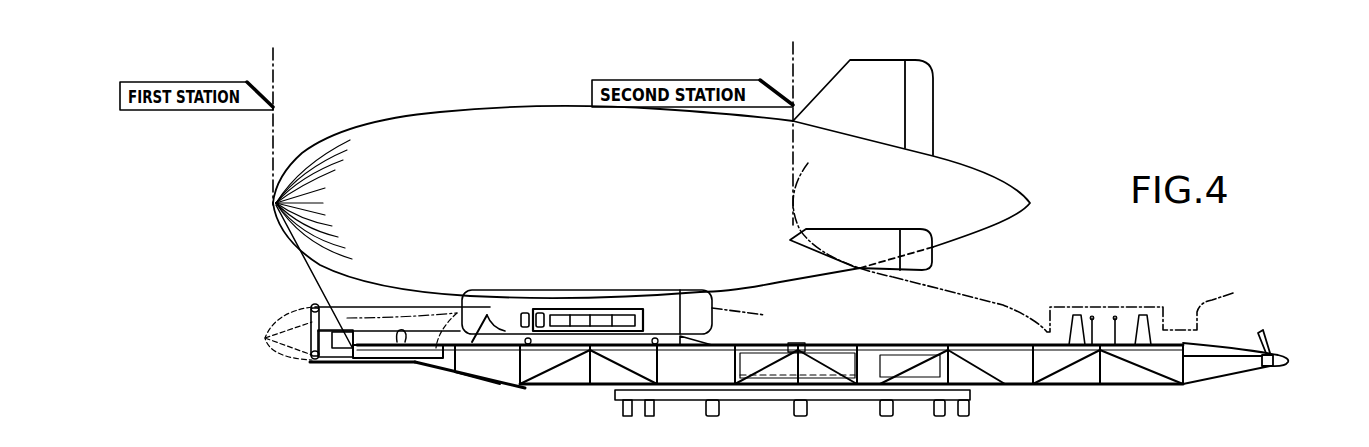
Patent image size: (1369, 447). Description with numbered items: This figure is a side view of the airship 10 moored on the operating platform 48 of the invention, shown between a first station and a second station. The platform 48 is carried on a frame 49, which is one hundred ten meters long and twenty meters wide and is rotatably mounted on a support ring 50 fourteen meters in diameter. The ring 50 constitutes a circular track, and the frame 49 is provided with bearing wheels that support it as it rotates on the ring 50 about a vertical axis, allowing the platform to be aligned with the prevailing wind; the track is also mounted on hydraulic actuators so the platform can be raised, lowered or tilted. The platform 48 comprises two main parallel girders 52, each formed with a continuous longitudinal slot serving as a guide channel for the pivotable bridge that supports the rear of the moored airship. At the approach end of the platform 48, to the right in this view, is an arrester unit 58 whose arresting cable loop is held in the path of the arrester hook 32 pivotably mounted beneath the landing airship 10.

The airship 10 is at (593, 191).
The arrester hook 32 is at (735, 309).
The platform 48 is at (400, 346).
The frame 49 is at (490, 374).
The support ring 50 is at (627, 395).
The main parallel girders 52 is at (960, 343).
The arrester unit 58 is at (1275, 345).